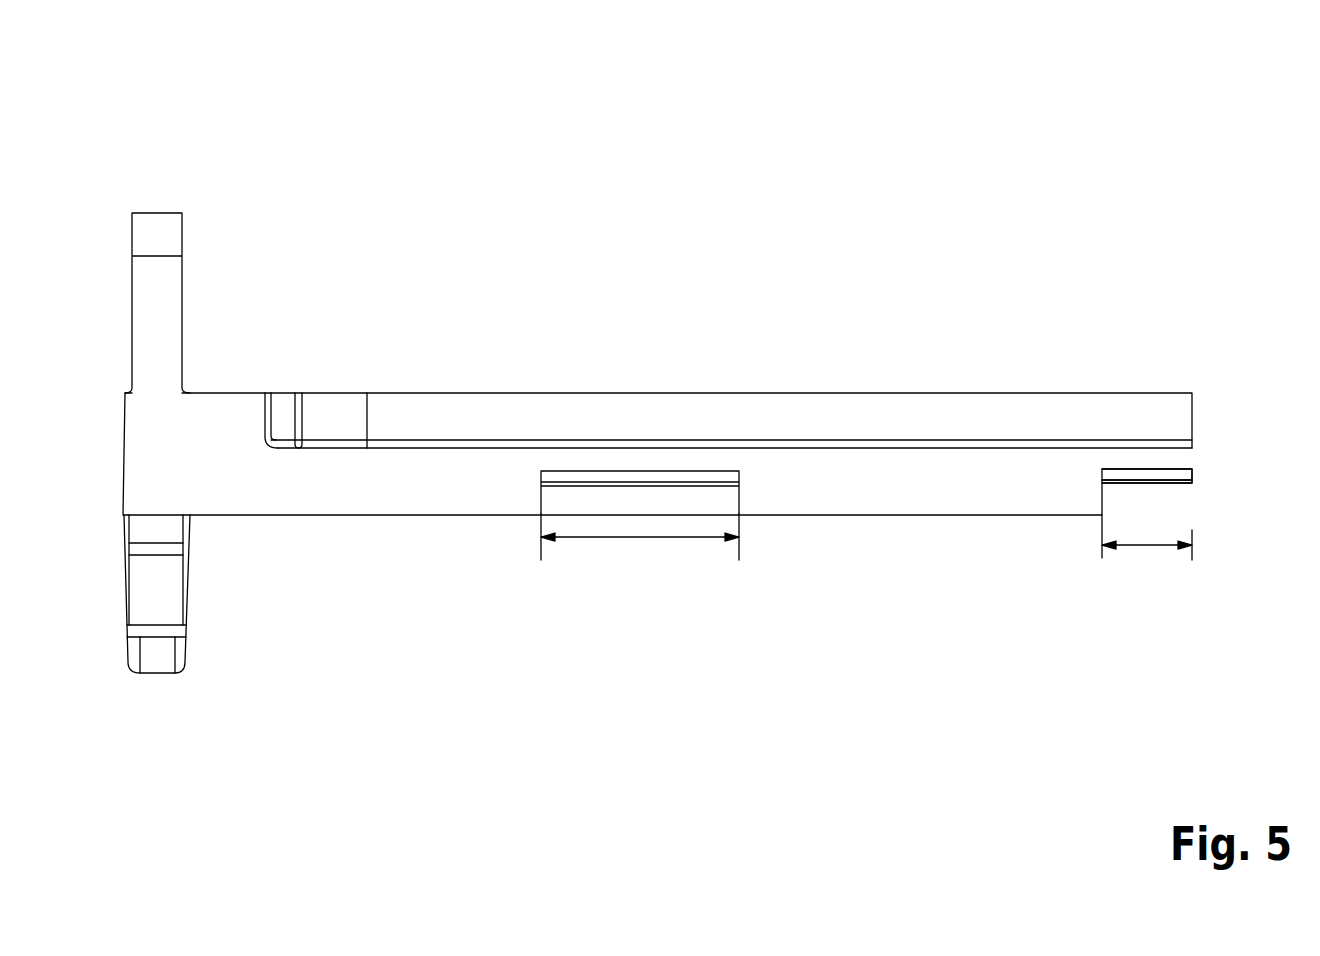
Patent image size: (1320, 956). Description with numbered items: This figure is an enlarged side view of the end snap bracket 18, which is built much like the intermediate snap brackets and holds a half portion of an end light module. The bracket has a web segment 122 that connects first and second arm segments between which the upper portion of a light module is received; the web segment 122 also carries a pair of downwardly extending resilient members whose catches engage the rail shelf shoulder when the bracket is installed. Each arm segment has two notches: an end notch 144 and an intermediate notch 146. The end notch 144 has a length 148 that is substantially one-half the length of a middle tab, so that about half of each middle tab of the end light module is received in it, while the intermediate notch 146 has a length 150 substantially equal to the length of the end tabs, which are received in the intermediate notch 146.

The end snap bracket 18 is at (933, 140).
The web segment 122 is at (131, 352).
The end notch 144 is at (1150, 498).
The intermediate notch 146 is at (685, 503).
The length of end notch 148 is at (1138, 547).
The length of intermediate notch 150 is at (636, 538).